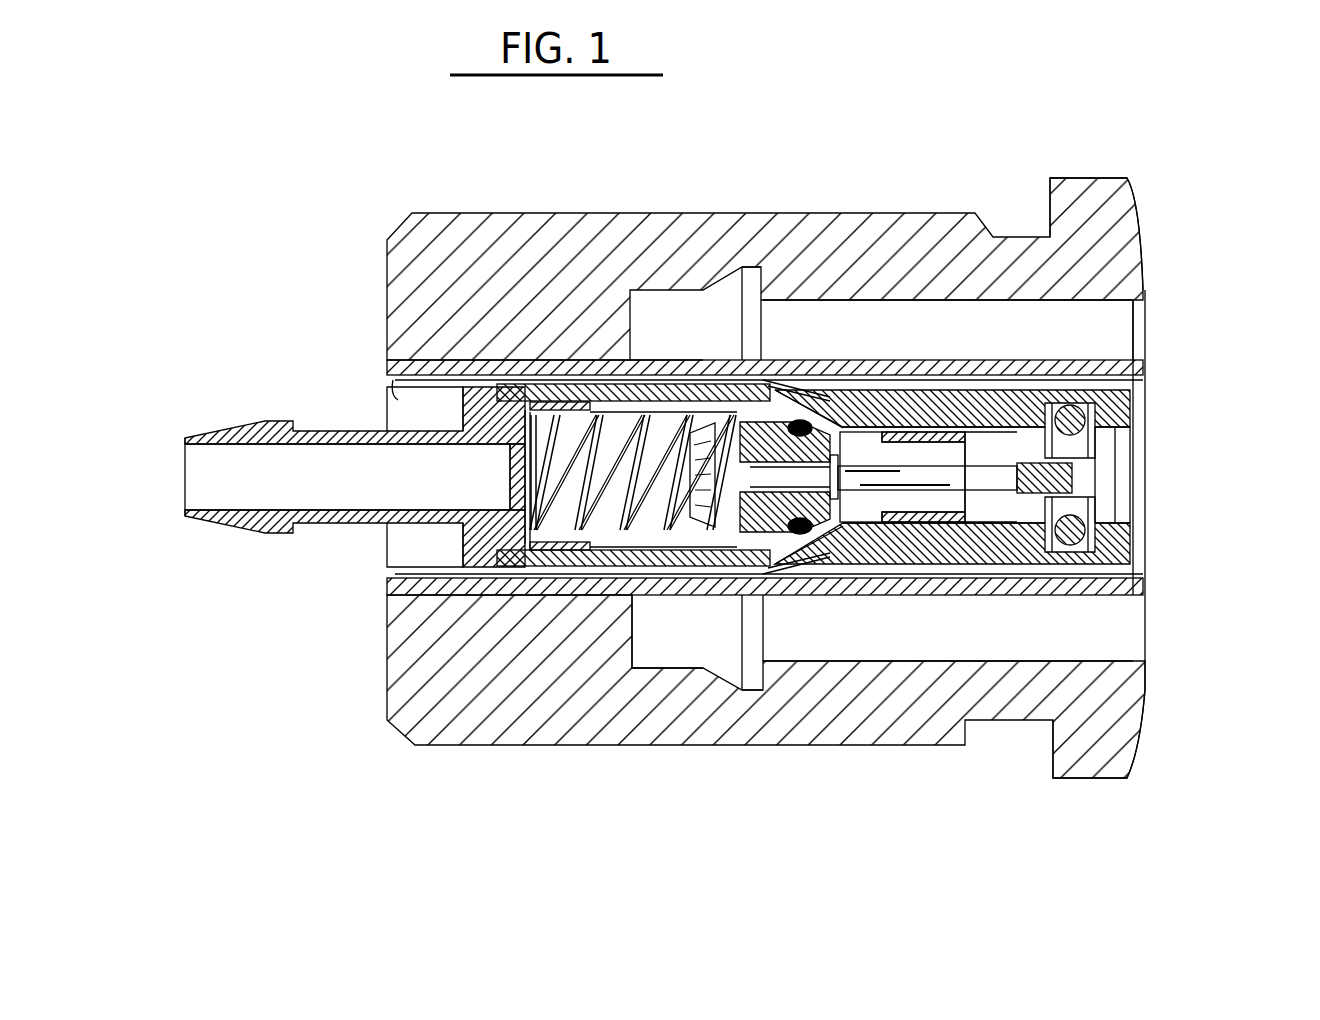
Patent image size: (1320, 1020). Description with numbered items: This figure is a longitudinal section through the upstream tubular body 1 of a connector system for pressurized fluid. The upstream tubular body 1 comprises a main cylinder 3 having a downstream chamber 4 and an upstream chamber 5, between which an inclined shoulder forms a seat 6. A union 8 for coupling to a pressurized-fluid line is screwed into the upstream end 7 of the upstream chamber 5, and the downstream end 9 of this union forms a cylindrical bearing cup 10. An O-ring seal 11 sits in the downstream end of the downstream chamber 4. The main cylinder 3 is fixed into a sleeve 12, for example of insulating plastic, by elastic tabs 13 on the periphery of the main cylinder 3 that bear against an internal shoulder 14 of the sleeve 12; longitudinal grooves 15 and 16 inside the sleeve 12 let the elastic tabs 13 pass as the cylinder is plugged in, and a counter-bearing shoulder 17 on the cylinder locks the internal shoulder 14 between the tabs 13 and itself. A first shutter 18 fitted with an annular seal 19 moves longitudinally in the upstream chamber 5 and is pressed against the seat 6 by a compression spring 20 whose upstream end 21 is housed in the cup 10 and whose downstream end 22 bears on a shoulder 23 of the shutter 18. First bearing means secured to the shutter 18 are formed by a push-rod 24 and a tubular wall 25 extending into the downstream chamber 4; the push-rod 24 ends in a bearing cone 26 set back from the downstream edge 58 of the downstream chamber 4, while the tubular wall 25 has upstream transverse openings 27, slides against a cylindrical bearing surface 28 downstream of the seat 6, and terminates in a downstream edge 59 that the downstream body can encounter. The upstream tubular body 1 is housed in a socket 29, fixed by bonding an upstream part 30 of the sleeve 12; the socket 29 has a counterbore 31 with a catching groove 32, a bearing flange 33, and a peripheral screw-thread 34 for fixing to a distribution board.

The upstream tubular body 1 is at (1082, 354).
The main cylinder 3 is at (1072, 328).
The downstream chamber 4 is at (1113, 505).
The upstream chamber 5 is at (637, 537).
The seat 6 is at (747, 565).
The upstream end 7 is at (548, 395).
The union 8 is at (257, 528).
The downstream end 9 is at (463, 540).
The cylindrical bearing cup 10 is at (460, 580).
The O-ring seal 11 is at (1093, 453).
The sleeve 12 is at (1120, 385).
The elastic tabs 13 is at (840, 412).
The internal shoulder 14 is at (770, 430).
The longitudinal groove 15 is at (390, 398).
The longitudinal groove 16 is at (1000, 400).
The counter-bearing shoulder 17 is at (680, 385).
The first shutter 18 is at (810, 426).
The annular seal 19 is at (882, 395).
The compression spring 20 is at (600, 415).
The upstream end 21 is at (512, 508).
The downstream end 22 is at (710, 565).
The shoulder 23 is at (740, 380).
The push-rod 24 is at (1060, 507).
The tubular wall 25 is at (957, 525).
The bearing cone 26 is at (1062, 488).
The upstream transverse openings 27 is at (868, 520).
The cylindrical bearing surface 28 is at (915, 382).
The socket 29 is at (1150, 745).
The upstream part 30 is at (443, 360).
The counterbore 31 is at (1092, 632).
The catching groove 32 is at (715, 665).
The bearing flange 33 is at (1100, 190).
The peripheral screw-thread 34 is at (456, 746).
The downstream edge 58 is at (1130, 552).
The downstream edge 59 is at (997, 505).